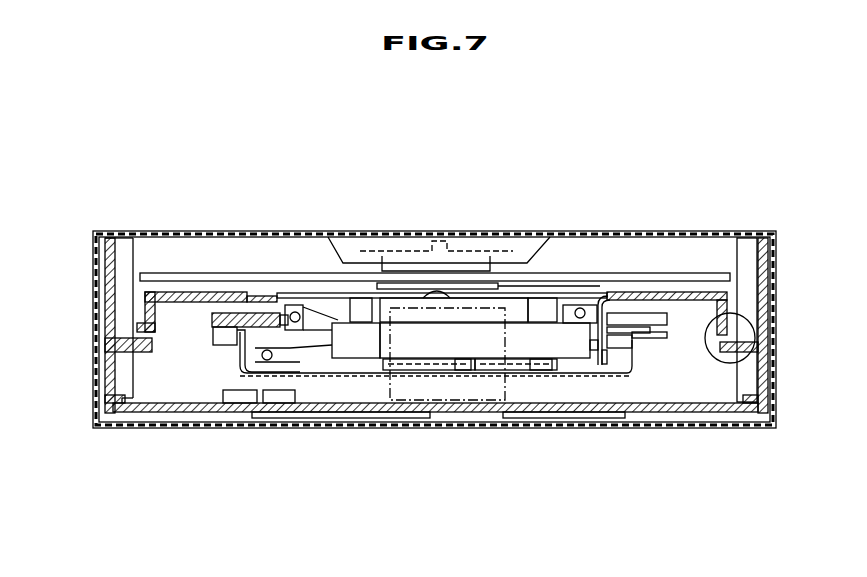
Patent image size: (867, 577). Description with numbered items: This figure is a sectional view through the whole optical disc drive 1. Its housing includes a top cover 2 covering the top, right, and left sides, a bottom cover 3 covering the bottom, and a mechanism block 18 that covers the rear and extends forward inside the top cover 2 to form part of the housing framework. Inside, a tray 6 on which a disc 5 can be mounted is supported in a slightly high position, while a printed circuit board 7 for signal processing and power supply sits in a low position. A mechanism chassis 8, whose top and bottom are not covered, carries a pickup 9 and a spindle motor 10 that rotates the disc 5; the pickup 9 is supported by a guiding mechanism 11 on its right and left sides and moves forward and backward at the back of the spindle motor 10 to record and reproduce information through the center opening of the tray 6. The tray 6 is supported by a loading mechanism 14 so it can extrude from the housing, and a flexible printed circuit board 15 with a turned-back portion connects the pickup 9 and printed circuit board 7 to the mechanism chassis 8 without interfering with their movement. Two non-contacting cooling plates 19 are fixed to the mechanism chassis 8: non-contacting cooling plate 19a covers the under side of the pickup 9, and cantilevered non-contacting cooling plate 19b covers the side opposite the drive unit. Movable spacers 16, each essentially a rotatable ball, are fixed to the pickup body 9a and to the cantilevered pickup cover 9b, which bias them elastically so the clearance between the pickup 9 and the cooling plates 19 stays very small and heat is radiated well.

The optical disc drive 1 is at (413, 142).
The top cover 2 is at (195, 232).
The bottom cover 3 is at (227, 428).
The disc 5 is at (232, 273).
The tray 6 is at (674, 292).
The printed circuit board 7 is at (658, 412).
The mechanism chassis 8 is at (214, 335).
The pickup 9 is at (333, 496).
The pickup body 9a is at (360, 374).
The pickup cover 9b is at (424, 374).
The spindle motor 10 is at (500, 285).
The guiding mechanism 11 is at (297, 308).
The loading mechanism 14 is at (603, 302).
The flexible printed circuit board 15 is at (370, 342).
The movable spacer 16 is at (540, 368).
The mechanism block 18 is at (745, 281).
The non-contacting cooling plates 19 is at (640, 496).
The non-contacting cooling plate 19a is at (590, 348).
The non-contacting cooling plate 19b is at (603, 360).